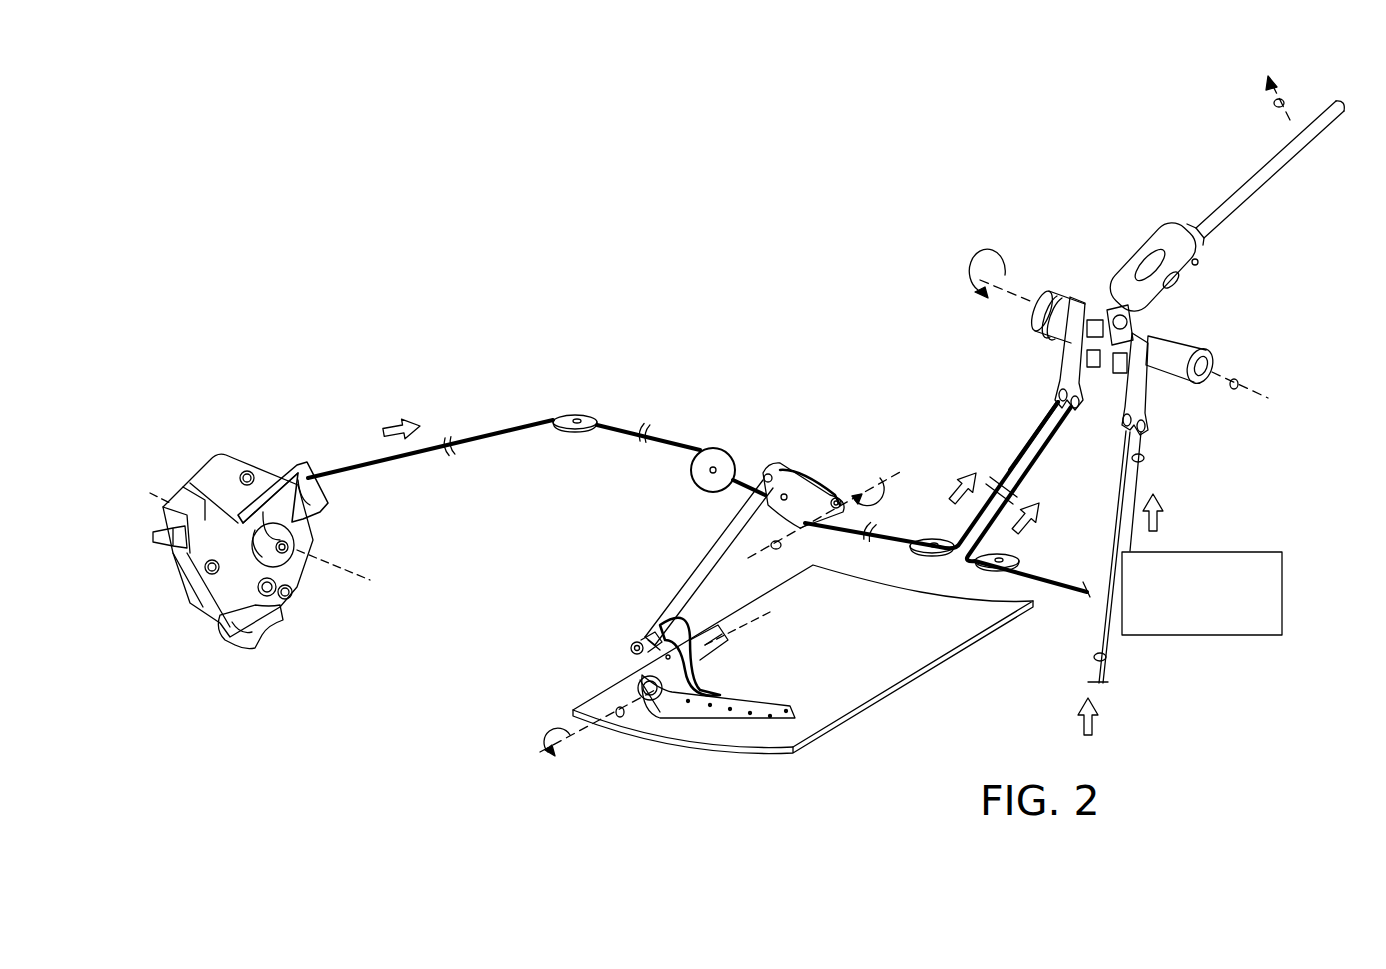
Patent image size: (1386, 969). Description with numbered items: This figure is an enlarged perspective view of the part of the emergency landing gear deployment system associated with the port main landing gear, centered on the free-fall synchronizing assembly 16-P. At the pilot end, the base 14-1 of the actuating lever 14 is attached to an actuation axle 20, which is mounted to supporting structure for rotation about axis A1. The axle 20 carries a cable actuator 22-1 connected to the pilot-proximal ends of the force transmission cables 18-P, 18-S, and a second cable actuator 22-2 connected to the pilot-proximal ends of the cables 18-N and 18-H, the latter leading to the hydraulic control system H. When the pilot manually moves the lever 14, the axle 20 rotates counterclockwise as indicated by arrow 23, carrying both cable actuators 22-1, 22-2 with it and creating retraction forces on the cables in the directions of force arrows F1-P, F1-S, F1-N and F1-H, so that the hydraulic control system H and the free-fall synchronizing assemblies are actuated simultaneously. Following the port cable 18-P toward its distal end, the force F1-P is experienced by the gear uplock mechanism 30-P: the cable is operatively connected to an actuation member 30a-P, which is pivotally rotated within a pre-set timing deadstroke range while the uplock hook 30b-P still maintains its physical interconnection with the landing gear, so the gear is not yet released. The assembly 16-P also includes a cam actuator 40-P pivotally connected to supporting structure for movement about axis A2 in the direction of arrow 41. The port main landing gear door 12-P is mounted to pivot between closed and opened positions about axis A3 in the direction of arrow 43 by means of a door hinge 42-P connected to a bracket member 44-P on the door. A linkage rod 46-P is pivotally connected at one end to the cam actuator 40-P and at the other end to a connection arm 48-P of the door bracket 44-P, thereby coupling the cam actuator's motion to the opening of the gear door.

The free-fall synchronizing assembly 16-P is at (763, 265).
The port main landing gear door 12-P is at (866, 669).
The gear uplock mechanism 30-P is at (240, 455).
The actuation member 30a-P is at (322, 511).
The uplock hook 30b-P is at (245, 645).
The force transmission cable 18-P is at (500, 433).
The force transmission cable 18-S is at (1027, 442).
The cam actuator 40-P is at (812, 472).
The arrow 41 is at (868, 480).
The axis A2 is at (778, 550).
The linkage rod 46-P is at (697, 575).
The connection arm 48-P is at (650, 633).
The door hinge 42-P is at (705, 662).
The bracket member 44-P is at (690, 715).
The axis A3 is at (618, 717).
The arrow 43 is at (555, 735).
The force arrow F1-P is at (397, 428).
The force arrow F1-S is at (1033, 530).
The force arrow F1-H is at (1160, 515).
The force arrow F1-N is at (1097, 730).
The actuating lever 14 is at (1267, 176).
The base 14-1 is at (1146, 244).
The arrow 23 is at (980, 262).
The actuation axle 20 is at (1180, 347).
The axis A1 is at (1240, 382).
The cable actuator 22-1 is at (1072, 357).
The cable actuator 22-2 is at (1150, 392).
The force transmission cable 18-H is at (1145, 460).
The force transmission cable 18-N is at (1104, 660).
The hydraulic control system H is at (1265, 635).